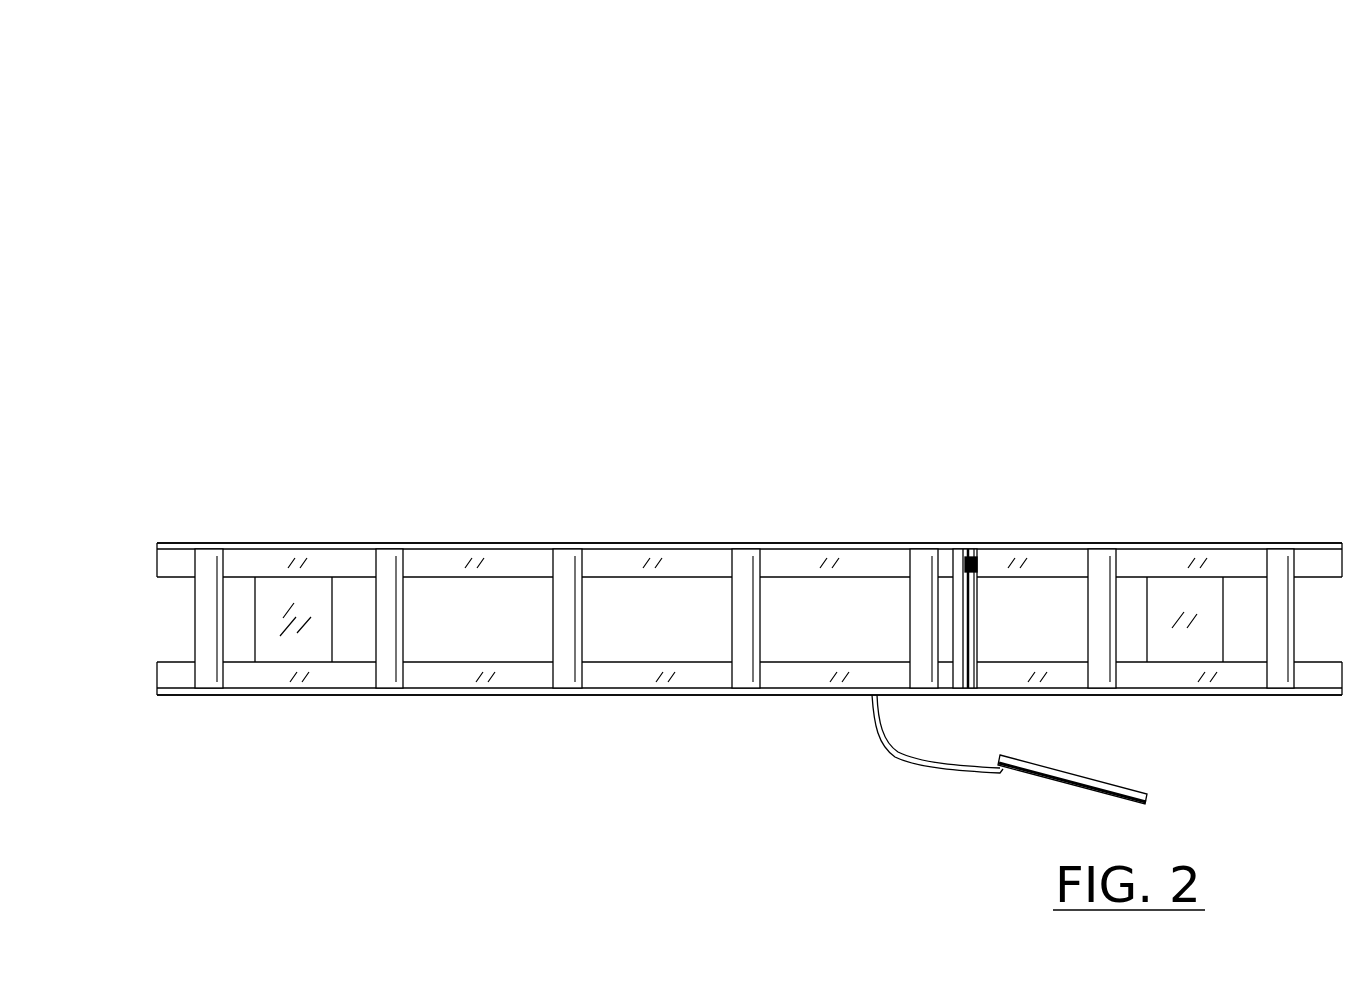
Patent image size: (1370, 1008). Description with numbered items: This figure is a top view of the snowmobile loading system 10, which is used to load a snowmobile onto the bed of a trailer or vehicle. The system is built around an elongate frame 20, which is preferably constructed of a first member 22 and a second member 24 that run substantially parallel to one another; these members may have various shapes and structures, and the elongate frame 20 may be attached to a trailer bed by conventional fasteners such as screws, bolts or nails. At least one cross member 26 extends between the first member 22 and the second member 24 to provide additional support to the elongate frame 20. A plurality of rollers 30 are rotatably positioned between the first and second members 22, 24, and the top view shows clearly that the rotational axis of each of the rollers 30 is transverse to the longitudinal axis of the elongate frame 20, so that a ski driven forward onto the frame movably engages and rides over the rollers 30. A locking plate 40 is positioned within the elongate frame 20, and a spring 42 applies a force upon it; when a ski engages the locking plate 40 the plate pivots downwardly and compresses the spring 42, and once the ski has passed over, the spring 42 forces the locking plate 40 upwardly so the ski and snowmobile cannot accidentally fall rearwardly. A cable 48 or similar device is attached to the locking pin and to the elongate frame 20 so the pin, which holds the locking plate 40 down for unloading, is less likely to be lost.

The snowmobile loading system 10 is at (1074, 255).
The elongate frame 20 is at (651, 700).
The first member 22 is at (610, 545).
The second member 24 is at (473, 690).
The cross member 26 is at (1193, 575).
The rollers 30 is at (380, 578).
The locking plate 40 is at (960, 567).
The spring 42 is at (980, 562).
The cable 48 is at (895, 757).